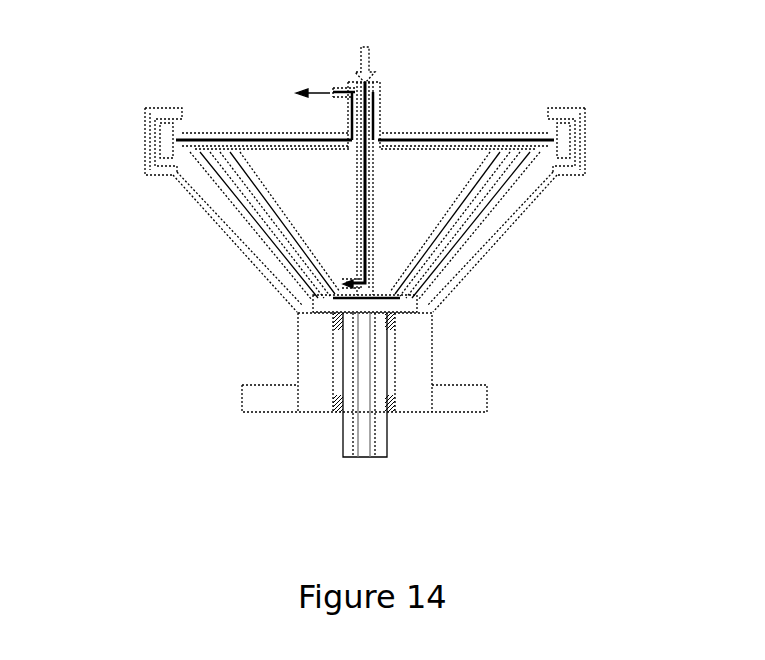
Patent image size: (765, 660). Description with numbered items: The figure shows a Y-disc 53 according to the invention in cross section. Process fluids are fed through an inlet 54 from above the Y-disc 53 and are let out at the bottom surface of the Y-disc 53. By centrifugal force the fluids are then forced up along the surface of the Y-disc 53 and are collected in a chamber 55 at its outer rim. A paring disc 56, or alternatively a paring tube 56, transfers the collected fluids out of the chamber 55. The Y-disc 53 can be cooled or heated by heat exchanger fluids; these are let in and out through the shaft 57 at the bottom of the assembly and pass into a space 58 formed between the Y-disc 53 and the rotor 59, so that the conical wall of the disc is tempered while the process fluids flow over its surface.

The Y-disc 53 is at (487, 211).
The inlet 54 is at (377, 180).
The chamber 55 is at (570, 138).
The paring disc 56 is at (255, 124).
The shaft 57 is at (332, 439).
The space 58 is at (252, 234).
The rotor 59 is at (464, 259).